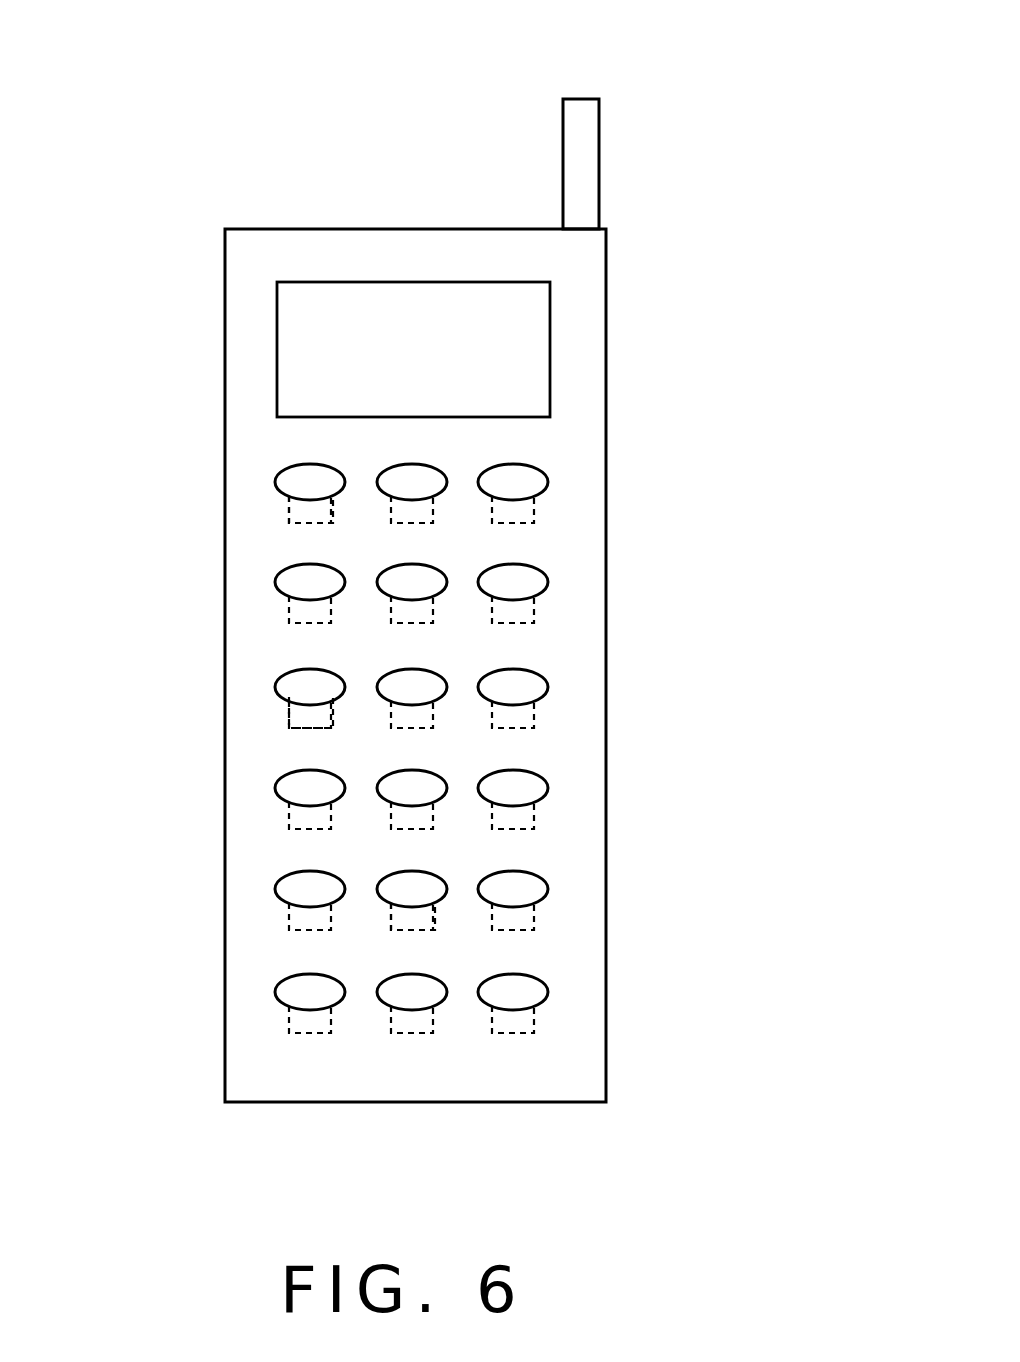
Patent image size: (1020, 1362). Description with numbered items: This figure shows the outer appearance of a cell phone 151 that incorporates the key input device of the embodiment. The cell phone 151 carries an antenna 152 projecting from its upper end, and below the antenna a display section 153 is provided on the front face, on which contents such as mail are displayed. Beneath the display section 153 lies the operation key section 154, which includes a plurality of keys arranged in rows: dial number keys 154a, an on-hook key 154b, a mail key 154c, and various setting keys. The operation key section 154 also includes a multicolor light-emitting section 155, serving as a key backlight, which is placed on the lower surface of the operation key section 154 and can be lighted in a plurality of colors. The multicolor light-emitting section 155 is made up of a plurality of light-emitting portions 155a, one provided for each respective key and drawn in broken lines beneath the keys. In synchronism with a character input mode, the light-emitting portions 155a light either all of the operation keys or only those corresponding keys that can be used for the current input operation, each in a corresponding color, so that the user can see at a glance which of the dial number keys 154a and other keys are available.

The cell phone 151 is at (641, 309).
The antenna 152 is at (588, 98).
The display section 153 is at (276, 340).
The operation key section 154 is at (525, 737).
The dial number keys 154a is at (543, 688).
The on-hook key 154b is at (536, 478).
The mail key 154c is at (586, 971).
The multicolor light-emitting section 155 is at (118, 453).
The light-emitting portions 155a is at (289, 511).